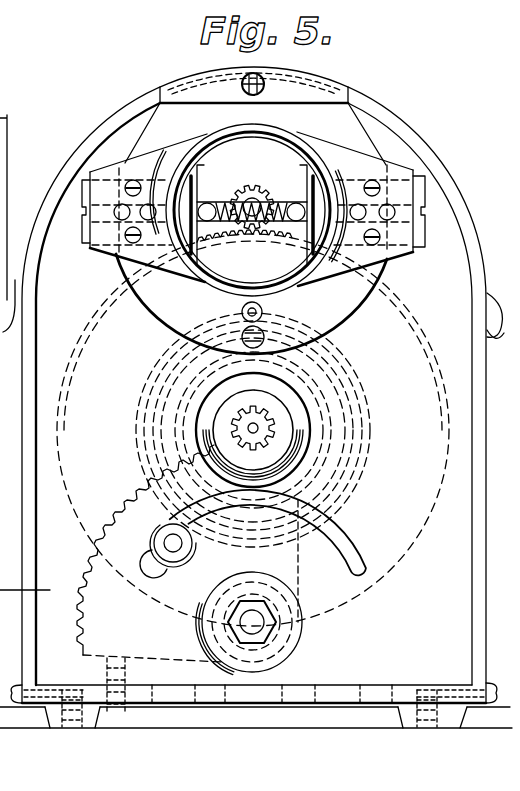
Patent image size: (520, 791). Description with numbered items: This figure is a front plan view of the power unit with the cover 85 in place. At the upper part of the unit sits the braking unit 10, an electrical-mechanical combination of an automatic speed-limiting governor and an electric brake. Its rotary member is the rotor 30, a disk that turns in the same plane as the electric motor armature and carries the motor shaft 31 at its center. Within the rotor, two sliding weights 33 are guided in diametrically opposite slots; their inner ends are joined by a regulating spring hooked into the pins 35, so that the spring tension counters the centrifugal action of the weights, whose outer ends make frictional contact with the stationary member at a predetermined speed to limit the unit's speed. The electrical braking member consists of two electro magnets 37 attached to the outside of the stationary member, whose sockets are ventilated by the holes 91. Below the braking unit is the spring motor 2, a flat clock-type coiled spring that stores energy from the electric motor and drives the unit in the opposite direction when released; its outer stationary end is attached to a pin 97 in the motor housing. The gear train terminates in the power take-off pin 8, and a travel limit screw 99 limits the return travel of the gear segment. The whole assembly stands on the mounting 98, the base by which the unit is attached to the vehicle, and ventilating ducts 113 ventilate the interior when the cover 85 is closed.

The spring motor 2 is at (362, 437).
The power take-off pin 8 is at (160, 539).
The braking unit 10 is at (346, 312).
The rotor 30 is at (233, 257).
The shaft 31 is at (255, 184).
The sliding weights 33 is at (317, 186).
The pins 35 is at (208, 200).
The electro magnets 37 is at (80, 247).
The cover 85 is at (85, 147).
The holes 91 is at (390, 206).
The pin 97 is at (266, 311).
The mounting 98 is at (238, 710).
The travel limit screw 99 is at (123, 713).
The ventilating ducts 113 is at (473, 331).